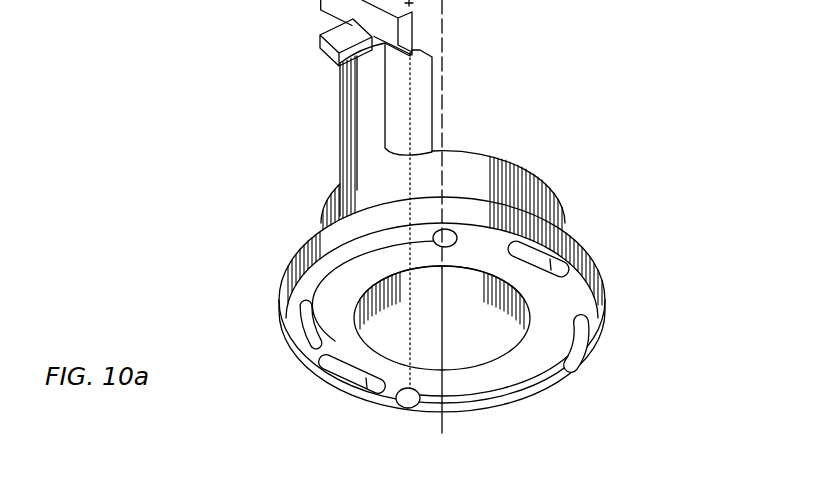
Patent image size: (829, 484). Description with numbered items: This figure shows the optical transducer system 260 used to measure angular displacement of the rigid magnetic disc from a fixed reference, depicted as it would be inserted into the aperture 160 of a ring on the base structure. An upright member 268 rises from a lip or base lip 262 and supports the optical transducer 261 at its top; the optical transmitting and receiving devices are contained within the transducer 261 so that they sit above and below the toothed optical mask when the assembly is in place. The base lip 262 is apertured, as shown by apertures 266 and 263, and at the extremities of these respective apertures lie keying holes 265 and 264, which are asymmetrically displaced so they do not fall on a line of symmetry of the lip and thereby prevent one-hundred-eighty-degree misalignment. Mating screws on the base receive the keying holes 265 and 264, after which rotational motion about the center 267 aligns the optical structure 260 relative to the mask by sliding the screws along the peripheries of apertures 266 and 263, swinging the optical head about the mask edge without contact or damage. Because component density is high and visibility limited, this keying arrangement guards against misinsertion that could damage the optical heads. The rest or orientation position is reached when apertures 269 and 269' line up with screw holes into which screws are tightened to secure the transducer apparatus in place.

The aperture 160 is at (493, 0).
The optical transducer system 260 is at (641, 198).
The optical transducer 261 is at (320, 42).
The base lip 262 is at (606, 293).
The aperture 263 is at (566, 356).
The keying hole 264 is at (402, 406).
The keying hole 265 is at (448, 229).
The aperture 266 is at (306, 299).
The center 267 is at (447, 421).
The upright member 268 is at (340, 112).
The aperture 269 is at (312, 388).
The aperture 269' is at (586, 252).